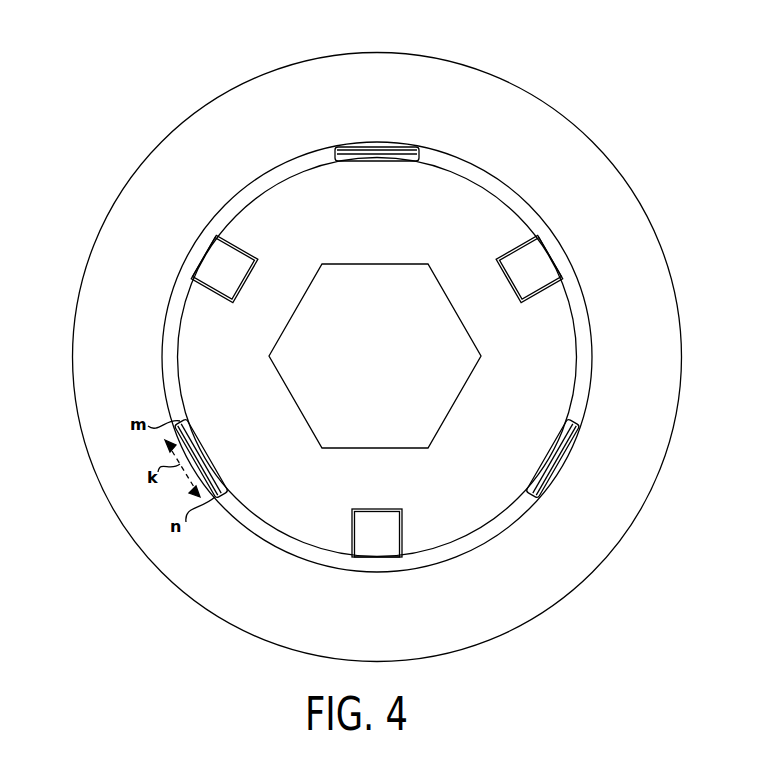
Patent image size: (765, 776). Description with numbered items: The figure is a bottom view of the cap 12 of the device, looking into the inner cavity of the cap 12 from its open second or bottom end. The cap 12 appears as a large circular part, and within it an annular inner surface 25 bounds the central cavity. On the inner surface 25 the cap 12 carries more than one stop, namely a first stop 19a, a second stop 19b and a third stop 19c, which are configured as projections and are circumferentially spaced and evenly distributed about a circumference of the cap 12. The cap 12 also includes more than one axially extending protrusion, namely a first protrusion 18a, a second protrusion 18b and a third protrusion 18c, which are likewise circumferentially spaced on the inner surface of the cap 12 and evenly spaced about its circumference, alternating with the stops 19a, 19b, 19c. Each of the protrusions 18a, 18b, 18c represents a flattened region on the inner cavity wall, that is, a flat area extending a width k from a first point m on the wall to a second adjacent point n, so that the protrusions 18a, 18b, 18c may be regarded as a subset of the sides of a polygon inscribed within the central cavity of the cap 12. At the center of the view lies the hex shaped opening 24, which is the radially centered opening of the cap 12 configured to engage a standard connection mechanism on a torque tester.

The cap 12 is at (102, 121).
The inner surface 25 is at (296, 188).
The hexagonal opening 24 is at (456, 397).
The stop 19a is at (528, 247).
The stop 19b is at (240, 247).
The stop 19c is at (400, 523).
The axially extending protrusion 18a is at (553, 434).
The axially extending protrusion 18b is at (418, 156).
The axially extending protrusion 18c is at (220, 468).